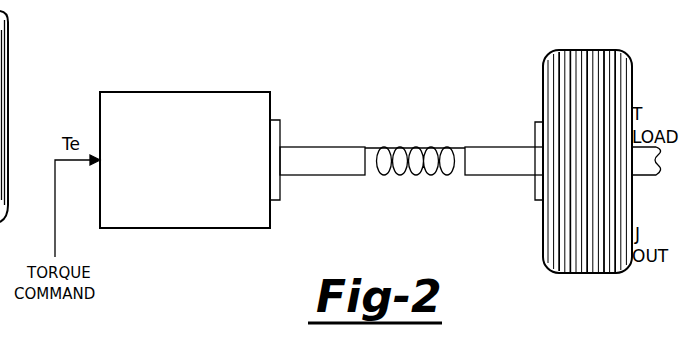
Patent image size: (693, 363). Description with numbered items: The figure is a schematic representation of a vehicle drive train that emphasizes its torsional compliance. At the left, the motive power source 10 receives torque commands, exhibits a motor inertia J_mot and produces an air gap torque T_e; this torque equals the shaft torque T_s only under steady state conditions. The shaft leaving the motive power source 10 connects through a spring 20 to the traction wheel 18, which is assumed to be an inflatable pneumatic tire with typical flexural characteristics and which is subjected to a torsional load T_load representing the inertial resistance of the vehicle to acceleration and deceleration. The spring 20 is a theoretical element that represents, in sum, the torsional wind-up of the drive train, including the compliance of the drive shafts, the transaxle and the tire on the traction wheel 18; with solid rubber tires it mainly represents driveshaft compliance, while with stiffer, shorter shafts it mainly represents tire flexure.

The motive power source 10 is at (221, 61).
The traction wheel 18 is at (8, 55).
The spring 20 is at (420, 148).